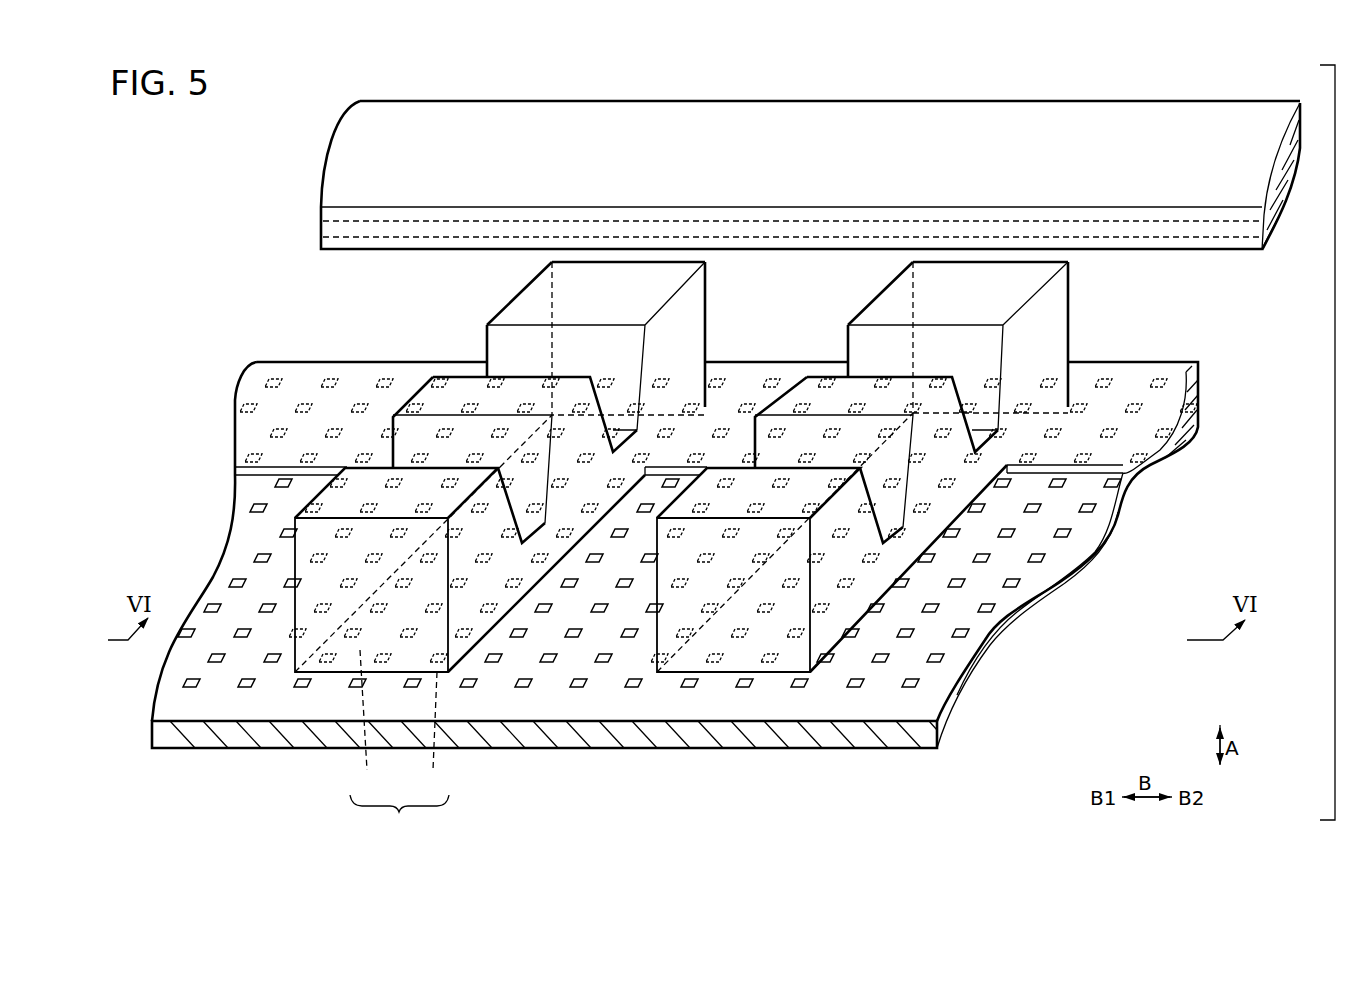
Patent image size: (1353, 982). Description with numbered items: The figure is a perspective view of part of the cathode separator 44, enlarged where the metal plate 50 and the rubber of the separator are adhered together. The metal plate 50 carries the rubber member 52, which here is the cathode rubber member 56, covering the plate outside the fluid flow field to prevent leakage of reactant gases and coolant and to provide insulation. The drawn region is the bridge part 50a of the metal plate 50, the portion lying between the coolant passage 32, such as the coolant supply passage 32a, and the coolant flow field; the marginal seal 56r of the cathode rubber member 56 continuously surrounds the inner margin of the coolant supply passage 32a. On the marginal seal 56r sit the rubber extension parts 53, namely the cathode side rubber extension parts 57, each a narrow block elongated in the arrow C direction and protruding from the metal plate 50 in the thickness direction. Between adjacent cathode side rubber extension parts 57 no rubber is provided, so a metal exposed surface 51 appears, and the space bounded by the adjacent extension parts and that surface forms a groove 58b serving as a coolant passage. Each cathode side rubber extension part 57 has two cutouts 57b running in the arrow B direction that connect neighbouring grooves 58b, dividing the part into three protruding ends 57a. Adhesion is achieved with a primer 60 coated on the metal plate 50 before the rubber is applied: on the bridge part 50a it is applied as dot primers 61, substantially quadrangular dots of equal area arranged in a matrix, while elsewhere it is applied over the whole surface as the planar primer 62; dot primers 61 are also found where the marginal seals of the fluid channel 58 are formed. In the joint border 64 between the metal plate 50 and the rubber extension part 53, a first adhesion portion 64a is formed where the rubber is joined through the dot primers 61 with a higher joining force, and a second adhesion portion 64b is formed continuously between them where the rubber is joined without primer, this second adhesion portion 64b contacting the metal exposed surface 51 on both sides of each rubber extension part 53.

The cathode separator 44 is at (491, 90).
The planar primer 62 is at (845, 122).
The primer 60 is at (792, 229).
The metal plate 50 is at (328, 228).
The bridge part 50a is at (146, 672).
The cathode rubber member 56 is at (248, 430).
The rubber member 52 is at (679, 470).
The marginal seal 56r is at (345, 140).
The coolant supply passage 32a is at (305, 322).
The coolant passage 32 is at (600, 422).
The cathode side rubber extension part 57 is at (598, 256).
The rubber extension part 53 is at (958, 256).
The protruding end 57a is at (465, 387).
The cutout 57b is at (868, 352).
The groove 58b is at (609, 682).
The fluid channel 58 is at (635, 666).
The metal exposed surface 51 is at (1047, 548).
The dot primer 61 is at (543, 663).
The first adhesion portion 64a is at (439, 734).
The second adhesion portion 64b is at (370, 723).
The joint border 64 is at (399, 815).